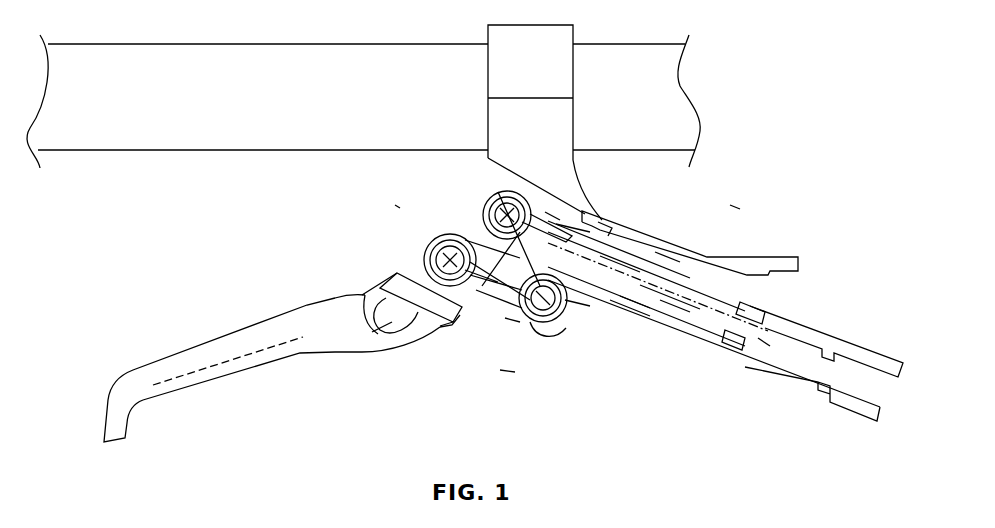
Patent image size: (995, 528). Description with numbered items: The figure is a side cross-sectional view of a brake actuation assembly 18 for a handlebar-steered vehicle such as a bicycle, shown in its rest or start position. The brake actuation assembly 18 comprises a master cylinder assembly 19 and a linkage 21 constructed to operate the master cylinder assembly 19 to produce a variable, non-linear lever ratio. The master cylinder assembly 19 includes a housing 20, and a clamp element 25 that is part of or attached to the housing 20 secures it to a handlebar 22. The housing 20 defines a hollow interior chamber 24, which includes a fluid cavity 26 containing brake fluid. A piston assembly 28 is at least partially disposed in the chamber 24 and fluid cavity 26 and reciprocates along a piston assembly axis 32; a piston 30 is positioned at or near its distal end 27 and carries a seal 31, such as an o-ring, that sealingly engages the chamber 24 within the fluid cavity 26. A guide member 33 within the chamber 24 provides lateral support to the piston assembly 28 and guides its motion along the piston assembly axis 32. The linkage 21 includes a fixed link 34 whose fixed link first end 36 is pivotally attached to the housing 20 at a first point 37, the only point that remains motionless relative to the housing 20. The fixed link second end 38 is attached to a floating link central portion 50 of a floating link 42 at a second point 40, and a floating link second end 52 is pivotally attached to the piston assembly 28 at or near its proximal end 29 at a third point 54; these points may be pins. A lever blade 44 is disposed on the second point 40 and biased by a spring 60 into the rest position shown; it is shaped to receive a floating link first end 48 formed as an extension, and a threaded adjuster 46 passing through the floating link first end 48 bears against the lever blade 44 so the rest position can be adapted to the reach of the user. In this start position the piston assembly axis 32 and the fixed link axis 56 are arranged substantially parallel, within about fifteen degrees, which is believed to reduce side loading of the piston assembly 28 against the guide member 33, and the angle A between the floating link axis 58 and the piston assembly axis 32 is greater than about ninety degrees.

The brake actuation assembly 18 is at (505, 378).
The master cylinder assembly 19 is at (736, 206).
The housing 20 is at (637, 231).
The linkage 21 is at (396, 204).
The handlebar 22 is at (662, 84).
The chamber 24 is at (662, 256).
The clamp element 25 is at (568, 38).
The fluid cavity 26 is at (830, 347).
The distal end 27 is at (782, 340).
The piston assembly 28 is at (766, 348).
The proximal end 29 is at (495, 205).
The piston 30 is at (762, 316).
The seal 31 is at (738, 348).
The piston assembly axis 32 is at (670, 312).
The guide member 33 is at (604, 222).
The fixed link 34 is at (545, 330).
The fixed link first end 36 is at (565, 312).
The first point 37 is at (532, 324).
The fixed link second end 38 is at (428, 246).
The second point 40 is at (452, 258).
The floating link 42 is at (462, 212).
The lever blade 44 is at (250, 365).
The adjuster 46 is at (390, 280).
The floating link first end 48 is at (400, 334).
The floating link central portion 50 is at (465, 300).
The floating link second end 52 is at (522, 214).
The third point 54 is at (556, 224).
The fixed link axis 56 is at (506, 318).
The floating link axis 58 is at (374, 334).
The spring 60 is at (450, 328).
The angle A is at (576, 302).